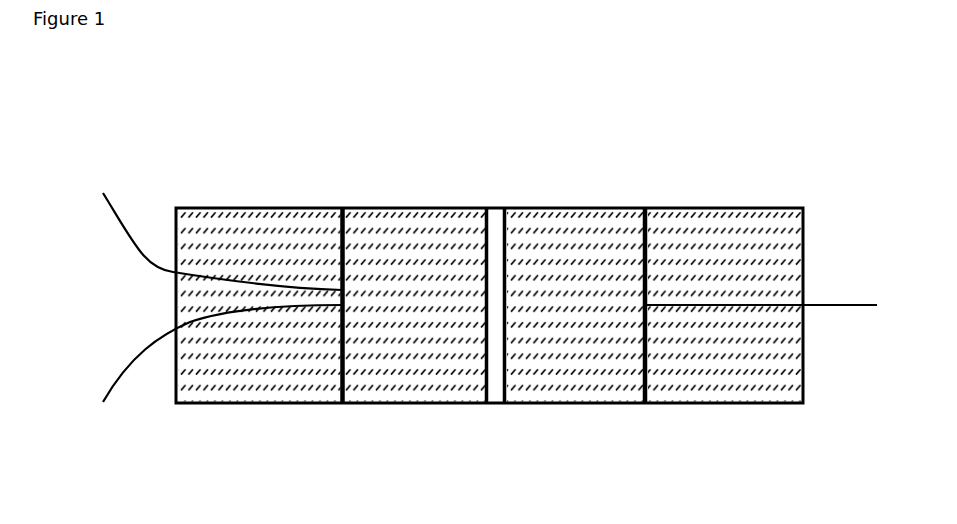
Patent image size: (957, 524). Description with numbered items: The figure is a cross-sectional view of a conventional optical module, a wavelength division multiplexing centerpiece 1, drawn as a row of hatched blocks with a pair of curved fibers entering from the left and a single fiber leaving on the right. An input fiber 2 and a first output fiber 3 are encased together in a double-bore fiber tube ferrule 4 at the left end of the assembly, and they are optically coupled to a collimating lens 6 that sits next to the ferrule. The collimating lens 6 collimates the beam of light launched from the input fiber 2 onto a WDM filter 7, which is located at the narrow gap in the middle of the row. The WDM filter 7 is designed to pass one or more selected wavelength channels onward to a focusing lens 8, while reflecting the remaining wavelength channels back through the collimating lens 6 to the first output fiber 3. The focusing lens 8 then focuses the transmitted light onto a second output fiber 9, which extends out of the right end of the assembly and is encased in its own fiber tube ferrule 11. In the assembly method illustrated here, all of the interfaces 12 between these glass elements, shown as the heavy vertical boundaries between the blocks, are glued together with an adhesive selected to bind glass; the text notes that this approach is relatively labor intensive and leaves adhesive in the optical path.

The wavelength division multiplexing centerpiece 1 is at (508, 120).
The input fiber 2 is at (122, 222).
The first output fiber 3 is at (120, 387).
The double-bore fiber tube ferrule 4 is at (295, 208).
The collimating lens 6 is at (450, 207).
The WDM filter 7 is at (497, 387).
The focusing lens 8 is at (608, 207).
The second output fiber 9 is at (837, 307).
The fiber tube ferrule 11 is at (672, 403).
The interfaces 12 is at (338, 360).